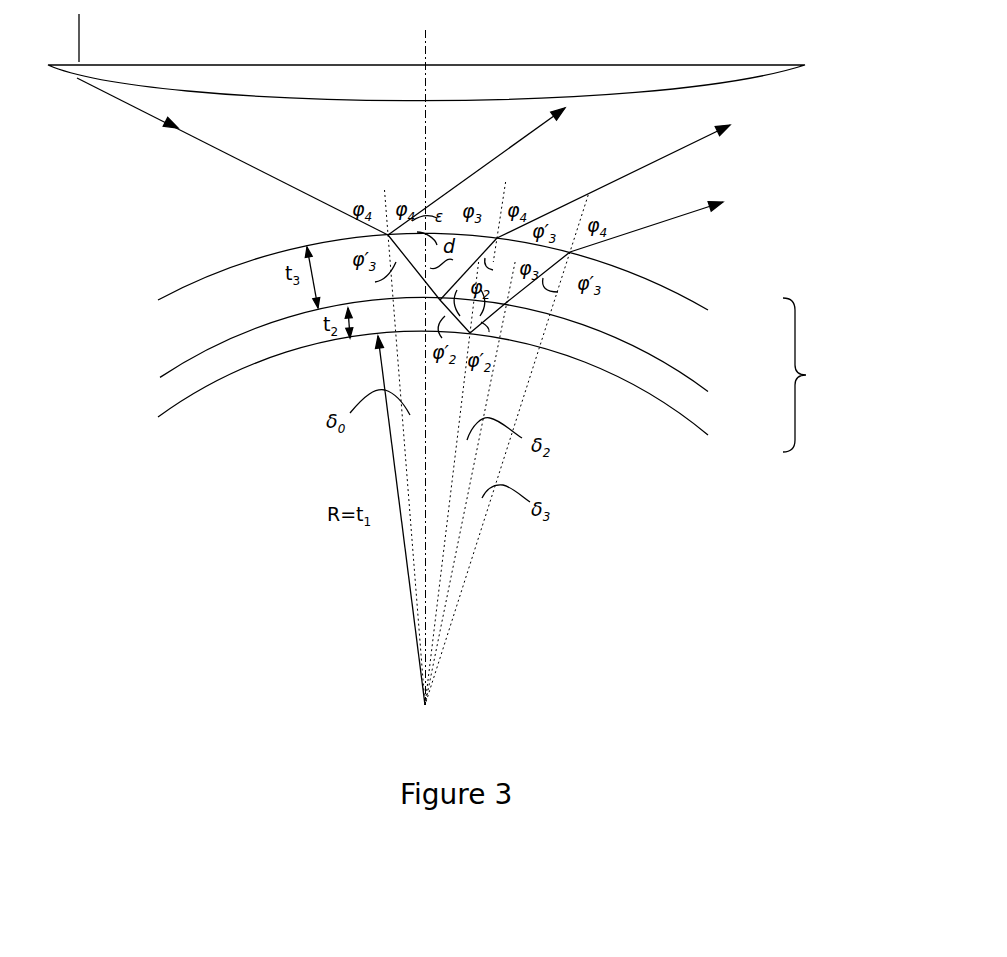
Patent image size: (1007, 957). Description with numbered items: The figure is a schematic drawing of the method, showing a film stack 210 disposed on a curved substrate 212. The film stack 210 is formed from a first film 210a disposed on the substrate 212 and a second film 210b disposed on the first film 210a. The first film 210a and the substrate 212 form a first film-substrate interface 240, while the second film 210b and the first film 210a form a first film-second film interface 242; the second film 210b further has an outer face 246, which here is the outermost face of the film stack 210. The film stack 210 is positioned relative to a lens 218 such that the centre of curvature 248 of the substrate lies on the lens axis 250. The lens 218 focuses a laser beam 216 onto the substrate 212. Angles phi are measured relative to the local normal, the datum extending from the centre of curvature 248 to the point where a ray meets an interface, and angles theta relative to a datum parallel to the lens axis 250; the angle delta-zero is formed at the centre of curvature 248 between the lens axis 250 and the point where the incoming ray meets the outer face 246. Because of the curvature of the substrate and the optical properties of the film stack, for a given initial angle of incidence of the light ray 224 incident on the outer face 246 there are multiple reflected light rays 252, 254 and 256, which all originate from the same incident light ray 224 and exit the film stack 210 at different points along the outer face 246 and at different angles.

The film stack 210 is at (822, 375).
The first film 210a is at (775, 424).
The second film 210b is at (775, 358).
The substrate 212 is at (652, 490).
The laser beam 216 is at (172, 49).
The lens 218 is at (758, 89).
The light ray 224 is at (228, 155).
The first film-substrate interface 240 is at (172, 412).
The first film-second film interface 242 is at (200, 349).
The outer face 246 is at (218, 272).
The centre of curvature 248 is at (428, 710).
The lens axis 250 is at (432, 57).
The reflected light ray 252 is at (527, 143).
The reflected light ray 254 is at (652, 163).
The reflected light ray 256 is at (677, 217).